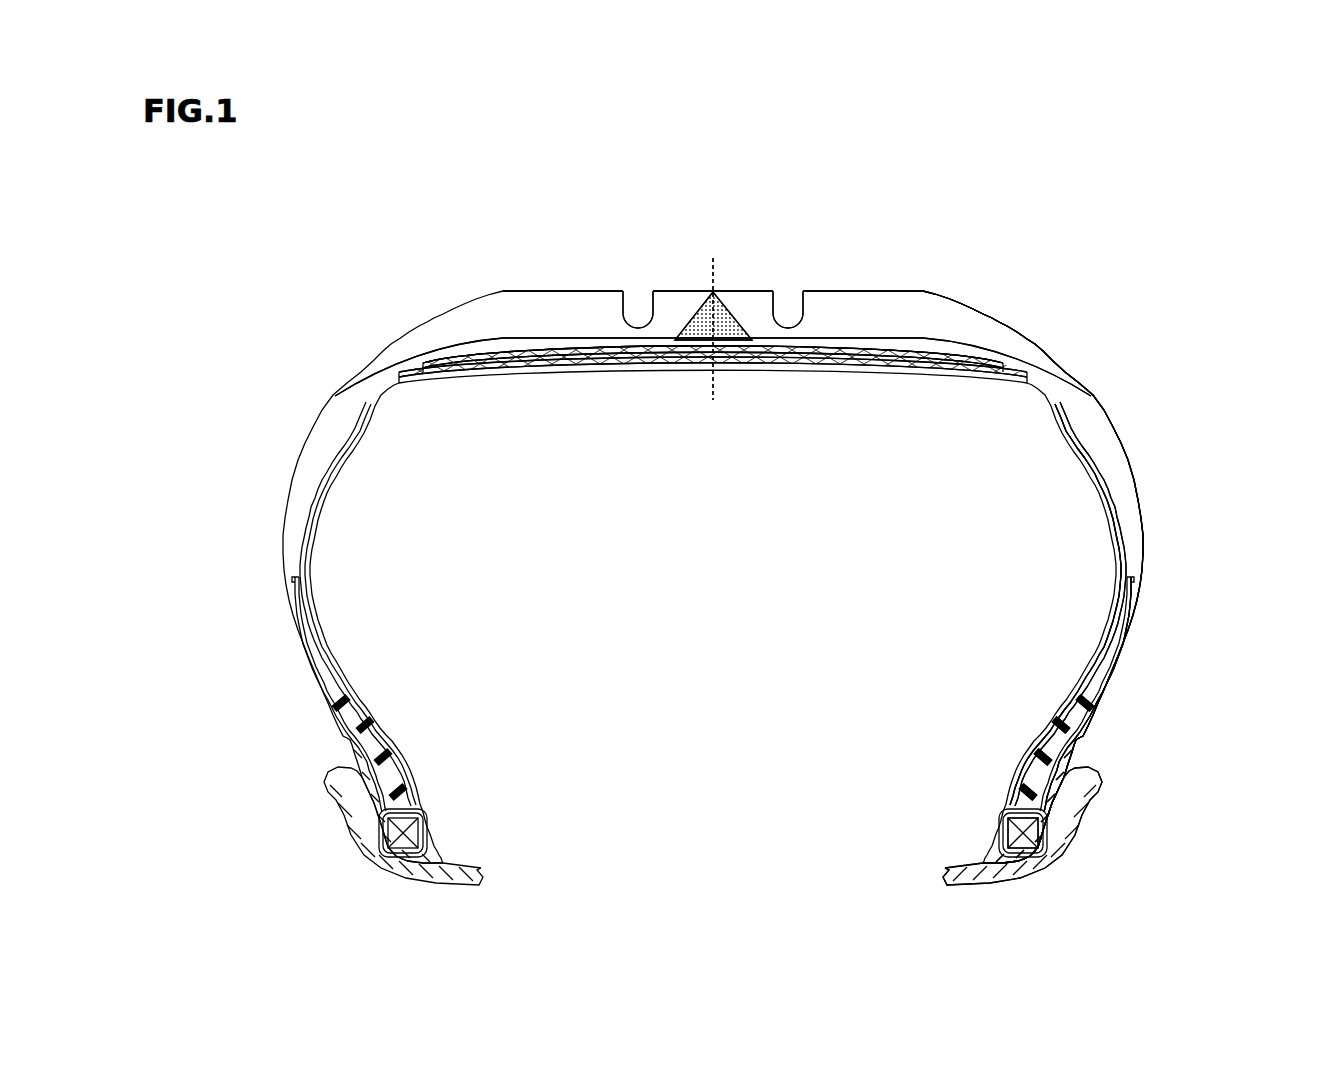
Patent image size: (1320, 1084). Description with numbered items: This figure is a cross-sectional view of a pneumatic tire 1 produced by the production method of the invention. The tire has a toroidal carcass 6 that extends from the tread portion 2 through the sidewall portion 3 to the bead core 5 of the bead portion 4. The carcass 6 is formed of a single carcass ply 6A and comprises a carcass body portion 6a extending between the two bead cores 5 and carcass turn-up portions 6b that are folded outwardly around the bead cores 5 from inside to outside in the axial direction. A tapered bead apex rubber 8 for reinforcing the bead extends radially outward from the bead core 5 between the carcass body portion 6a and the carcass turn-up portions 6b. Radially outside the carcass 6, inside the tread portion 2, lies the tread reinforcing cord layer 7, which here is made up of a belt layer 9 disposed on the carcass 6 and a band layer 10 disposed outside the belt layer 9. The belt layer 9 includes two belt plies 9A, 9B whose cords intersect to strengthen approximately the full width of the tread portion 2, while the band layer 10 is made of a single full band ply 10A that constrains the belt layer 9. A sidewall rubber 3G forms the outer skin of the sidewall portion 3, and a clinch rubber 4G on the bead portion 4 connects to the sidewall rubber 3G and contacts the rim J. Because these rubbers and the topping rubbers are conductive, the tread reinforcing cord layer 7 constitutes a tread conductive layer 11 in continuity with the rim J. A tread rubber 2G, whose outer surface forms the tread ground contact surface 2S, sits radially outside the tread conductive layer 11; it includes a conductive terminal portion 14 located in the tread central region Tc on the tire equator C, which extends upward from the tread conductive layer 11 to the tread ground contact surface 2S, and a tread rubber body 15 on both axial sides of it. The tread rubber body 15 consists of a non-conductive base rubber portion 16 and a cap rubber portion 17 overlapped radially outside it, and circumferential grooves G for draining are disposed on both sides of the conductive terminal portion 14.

The pneumatic tire 1 is at (1094, 295).
The tread portion 2 is at (1000, 278).
The tread rubber 2G is at (878, 318).
The tread ground contact surface 2S is at (922, 300).
The sidewall portion 3 is at (1152, 536).
The sidewall rubber 3G is at (1100, 438).
The bead portion 4 is at (983, 772).
The clinch rubber 4G is at (1067, 757).
The bead core 5 is at (1005, 834).
The carcass 6 is at (992, 523).
The carcass ply 6A is at (1070, 604).
The carcass body portion 6a is at (1110, 513).
The carcass turn-up portion 6b is at (1117, 620).
The tread reinforcing cord layer 7 is at (667, 526).
The tread conductive layer 11 is at (713, 370).
The bead apex rubber 8 is at (1046, 729).
The belt layer 9 is at (562, 480).
The belt ply 9A is at (498, 352).
The belt ply 9B is at (543, 350).
The band layer 10 is at (597, 338).
The band ply 10A is at (713, 354).
The conductive terminal portion 14 is at (700, 320).
The tread rubber body 15 is at (583, 222).
The base rubber portion 16 is at (513, 343).
The cap rubber portion 17 is at (563, 320).
The circumferential groove G is at (634, 287).
The tread central region Tc is at (768, 243).
The tire equator C is at (712, 344).
The rim J is at (967, 866).